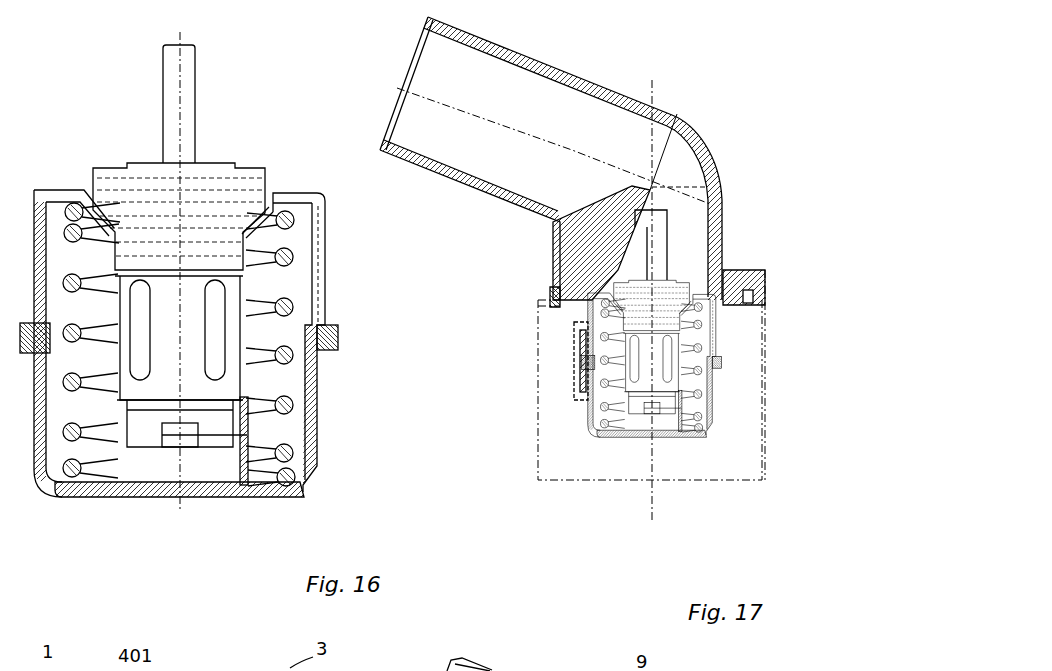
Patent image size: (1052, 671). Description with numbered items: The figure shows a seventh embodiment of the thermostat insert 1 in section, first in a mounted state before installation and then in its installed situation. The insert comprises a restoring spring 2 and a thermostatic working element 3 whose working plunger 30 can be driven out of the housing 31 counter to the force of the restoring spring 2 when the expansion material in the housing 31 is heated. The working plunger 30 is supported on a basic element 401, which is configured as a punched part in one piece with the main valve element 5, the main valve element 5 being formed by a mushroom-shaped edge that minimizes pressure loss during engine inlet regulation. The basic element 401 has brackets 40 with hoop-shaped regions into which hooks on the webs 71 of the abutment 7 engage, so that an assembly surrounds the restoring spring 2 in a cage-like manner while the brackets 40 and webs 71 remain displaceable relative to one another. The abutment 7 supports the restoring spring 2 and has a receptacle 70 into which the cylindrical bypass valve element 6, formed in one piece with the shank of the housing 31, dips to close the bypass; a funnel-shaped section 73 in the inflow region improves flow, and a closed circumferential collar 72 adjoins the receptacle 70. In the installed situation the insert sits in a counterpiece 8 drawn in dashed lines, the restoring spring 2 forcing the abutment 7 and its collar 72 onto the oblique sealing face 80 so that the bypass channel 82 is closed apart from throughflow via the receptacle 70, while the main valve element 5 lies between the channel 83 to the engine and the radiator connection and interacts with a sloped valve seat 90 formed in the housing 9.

In FIG. 16, the thermostat insert 1 is at (102, 133).
In FIG. 16, the basic element 401 is at (139, 127).
In FIG. 16, the thermostatic working element 3 is at (276, 71).
In FIG. 16, the working plunger 30 is at (185, 130).
In FIG. 16, the housing 31 is at (197, 285).
In FIG. 16, the main valve element 5 is at (300, 190).
In FIG. 16, the restoring spring 2 is at (300, 215).
In FIG. 17, the restoring spring 2 is at (567, 313).
In FIG. 16, the brackets 40 is at (318, 277).
In FIG. 17, the brackets 40 is at (577, 333).
In FIG. 16, the webs 71 is at (318, 405).
In FIG. 17, the webs 71 is at (577, 380).
In FIG. 16, the funnel-shaped section 73 is at (302, 496).
In FIG. 16, the collar 72 is at (57, 490).
In FIG. 17, the collar 72 is at (707, 395).
In FIG. 16, the bypass valve element 6 is at (232, 397).
In FIG. 17, the bypass valve element 6 is at (638, 388).
In FIG. 16, the receptacle 70 is at (120, 465).
In FIG. 16, the abutment 7 is at (108, 512).
In FIG. 17, the housing 9 is at (624, 96).
In FIG. 17, the valve seat 90 is at (712, 302).
In FIG. 17, the counterpiece 8 is at (553, 423).
In FIG. 17, the channel to the engine 83 is at (573, 345).
In FIG. 17, the oblique sealing face 80 is at (598, 432).
In FIG. 17, the bypass channel 82 is at (672, 462).